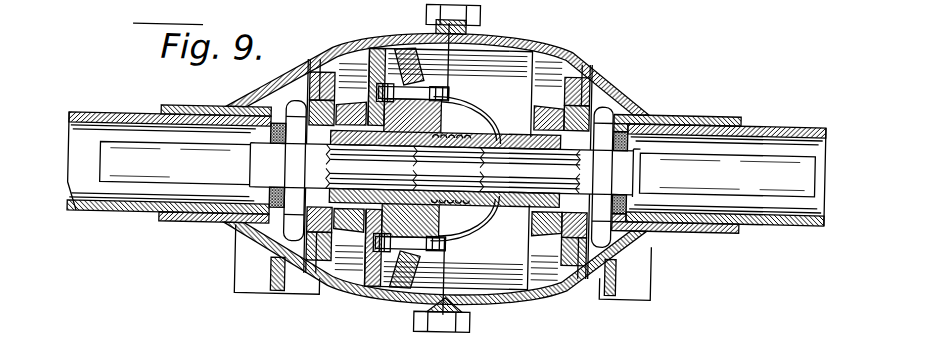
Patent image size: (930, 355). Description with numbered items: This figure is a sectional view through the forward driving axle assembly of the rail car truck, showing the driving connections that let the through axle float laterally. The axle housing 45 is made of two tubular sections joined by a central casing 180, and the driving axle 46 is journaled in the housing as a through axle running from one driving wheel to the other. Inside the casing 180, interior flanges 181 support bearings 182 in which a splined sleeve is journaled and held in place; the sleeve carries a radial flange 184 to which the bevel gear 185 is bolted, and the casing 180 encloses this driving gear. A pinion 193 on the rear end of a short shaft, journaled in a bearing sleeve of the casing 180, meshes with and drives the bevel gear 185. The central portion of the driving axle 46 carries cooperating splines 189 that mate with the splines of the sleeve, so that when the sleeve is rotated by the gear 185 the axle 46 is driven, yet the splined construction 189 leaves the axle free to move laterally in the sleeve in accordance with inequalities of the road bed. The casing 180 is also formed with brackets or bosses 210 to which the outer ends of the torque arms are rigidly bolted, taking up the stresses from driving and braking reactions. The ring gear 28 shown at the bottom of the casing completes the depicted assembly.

The ring gear 28 is at (353, 299).
The axle housing 45 is at (86, 218).
The driving axle 46 is at (142, 183).
The central casing 180 is at (582, 83).
The interior flanges 181 is at (314, 250).
The bearings 182 is at (348, 102).
The radial flange 184 is at (445, 250).
The bevel gear 185 is at (514, 101).
The splines 189 is at (497, 179).
The pinion 193 is at (515, 172).
The brackets or bosses 210 is at (241, 297).